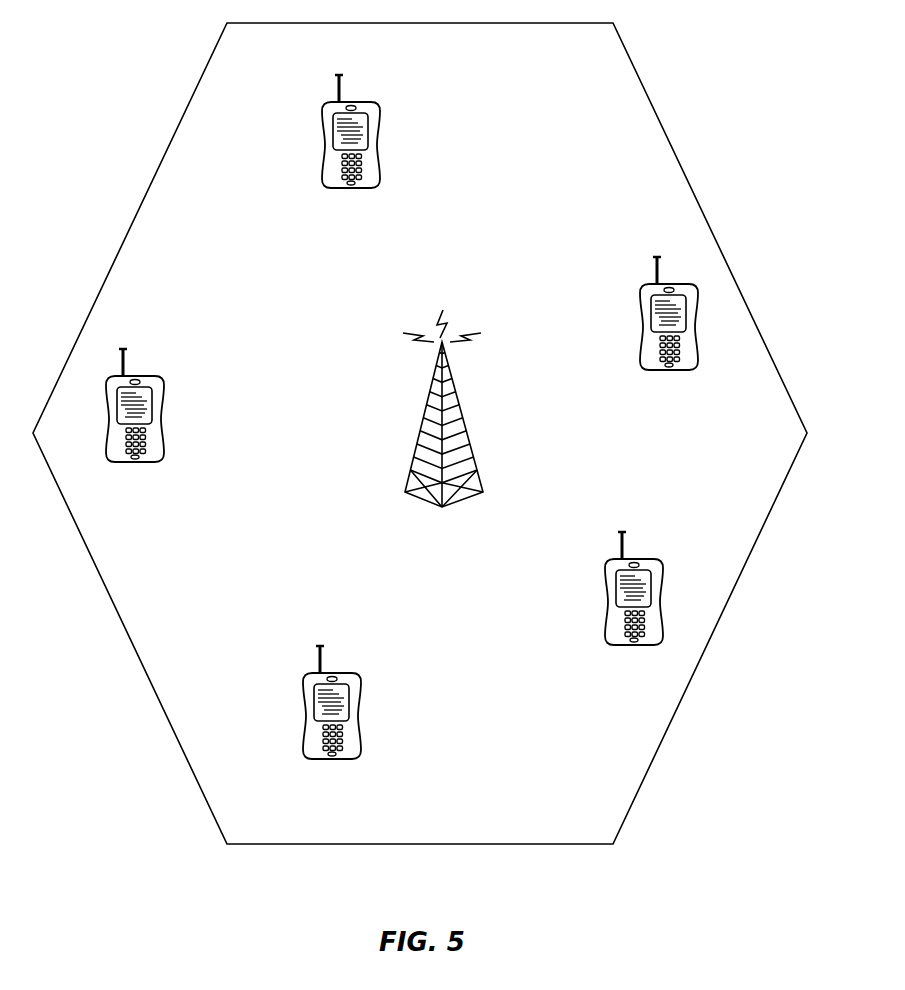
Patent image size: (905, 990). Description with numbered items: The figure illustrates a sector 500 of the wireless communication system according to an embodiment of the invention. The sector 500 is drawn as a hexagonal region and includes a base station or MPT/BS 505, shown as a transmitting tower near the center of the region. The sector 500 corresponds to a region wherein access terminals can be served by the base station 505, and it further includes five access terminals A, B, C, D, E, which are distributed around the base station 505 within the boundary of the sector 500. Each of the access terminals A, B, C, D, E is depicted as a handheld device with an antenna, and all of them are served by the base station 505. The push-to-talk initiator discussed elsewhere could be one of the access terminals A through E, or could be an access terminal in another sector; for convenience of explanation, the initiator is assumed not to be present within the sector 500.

The sector 500 is at (331, 845).
The base station 505 is at (427, 503).
The access terminal A is at (135, 422).
The access terminal B is at (351, 147).
The access terminal C is at (669, 328).
The access terminal D is at (634, 603).
The access terminal E is at (332, 717).